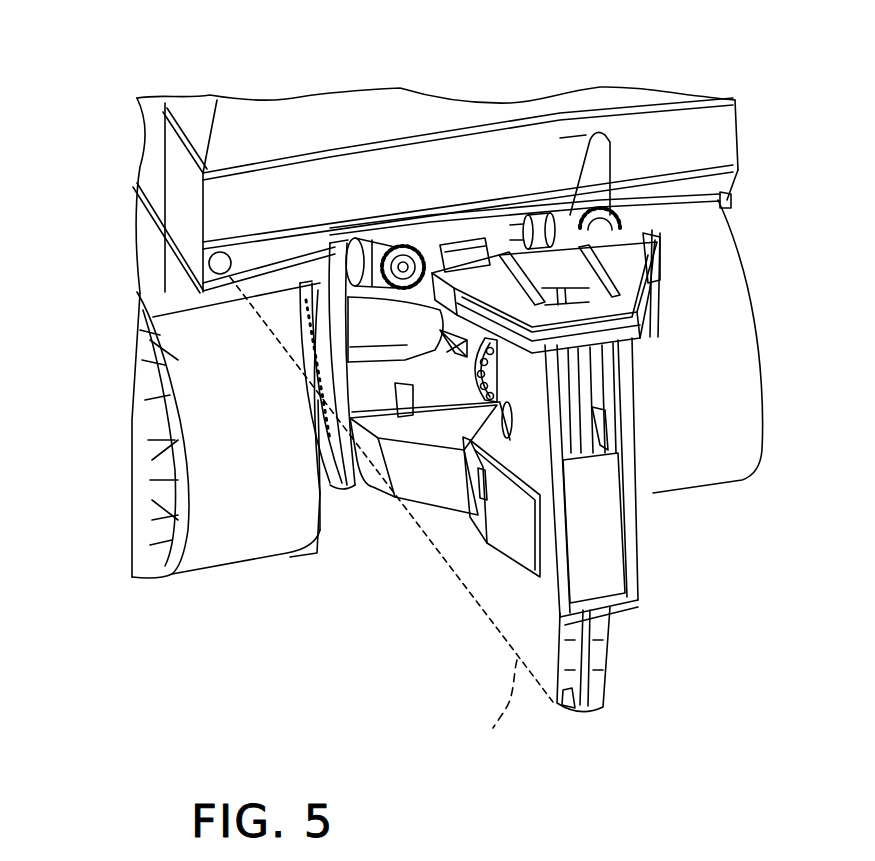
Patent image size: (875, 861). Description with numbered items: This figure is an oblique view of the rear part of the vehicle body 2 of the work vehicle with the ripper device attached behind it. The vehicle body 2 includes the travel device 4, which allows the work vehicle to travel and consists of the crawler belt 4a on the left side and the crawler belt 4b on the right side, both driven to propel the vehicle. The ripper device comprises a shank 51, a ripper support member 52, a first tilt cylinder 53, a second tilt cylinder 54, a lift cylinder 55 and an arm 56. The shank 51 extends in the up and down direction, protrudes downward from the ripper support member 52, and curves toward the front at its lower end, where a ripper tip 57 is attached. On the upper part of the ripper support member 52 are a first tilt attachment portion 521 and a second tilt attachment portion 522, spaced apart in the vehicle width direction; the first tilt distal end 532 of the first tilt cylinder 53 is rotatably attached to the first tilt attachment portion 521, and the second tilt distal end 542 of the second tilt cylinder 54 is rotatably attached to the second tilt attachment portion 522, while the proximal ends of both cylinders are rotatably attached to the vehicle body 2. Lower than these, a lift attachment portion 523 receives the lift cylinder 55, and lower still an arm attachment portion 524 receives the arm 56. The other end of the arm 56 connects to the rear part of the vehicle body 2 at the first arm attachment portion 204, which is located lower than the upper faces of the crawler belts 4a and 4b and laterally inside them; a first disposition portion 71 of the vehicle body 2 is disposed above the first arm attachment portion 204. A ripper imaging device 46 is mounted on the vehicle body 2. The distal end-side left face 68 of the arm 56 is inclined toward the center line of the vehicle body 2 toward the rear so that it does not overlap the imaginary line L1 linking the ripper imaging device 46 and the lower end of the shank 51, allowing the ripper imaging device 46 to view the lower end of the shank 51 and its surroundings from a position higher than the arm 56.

The vehicle body 2 is at (175, 162).
The ripper imaging device 46 is at (208, 259).
The first disposition portion 71 is at (340, 326).
The travel device 4 is at (117, 407).
The crawler belt 4a is at (220, 560).
The crawler belt 4b is at (753, 347).
The lift cylinder 55 is at (347, 393).
The first tilt cylinder 53 is at (370, 247).
The first tilt distal end 532 is at (437, 240).
The first tilt attachment portion 521 is at (500, 210).
The second tilt cylinder 54 is at (565, 216).
The second tilt distal end 542 is at (637, 227).
The second tilt attachment portion 522 is at (647, 226).
The ripper support member 52 is at (640, 554).
The shank 51 is at (600, 660).
The ripper tip 57 is at (562, 707).
The first arm attachment portion 204 is at (373, 487).
The arm 56 is at (385, 512).
The distal end-side left face 68 is at (424, 490).
The arm attachment portion 524 is at (463, 500).
The lift attachment portion 523 is at (515, 560).
The imaginary line L1 is at (391, 517).